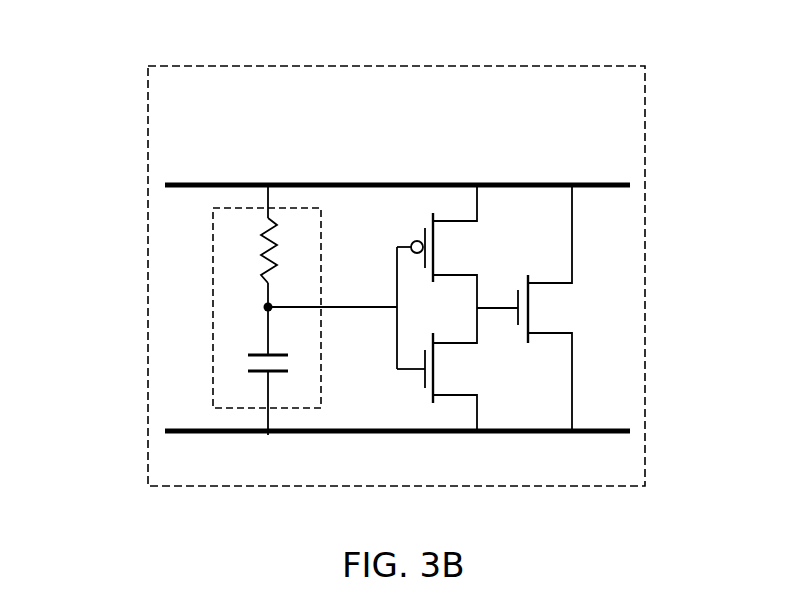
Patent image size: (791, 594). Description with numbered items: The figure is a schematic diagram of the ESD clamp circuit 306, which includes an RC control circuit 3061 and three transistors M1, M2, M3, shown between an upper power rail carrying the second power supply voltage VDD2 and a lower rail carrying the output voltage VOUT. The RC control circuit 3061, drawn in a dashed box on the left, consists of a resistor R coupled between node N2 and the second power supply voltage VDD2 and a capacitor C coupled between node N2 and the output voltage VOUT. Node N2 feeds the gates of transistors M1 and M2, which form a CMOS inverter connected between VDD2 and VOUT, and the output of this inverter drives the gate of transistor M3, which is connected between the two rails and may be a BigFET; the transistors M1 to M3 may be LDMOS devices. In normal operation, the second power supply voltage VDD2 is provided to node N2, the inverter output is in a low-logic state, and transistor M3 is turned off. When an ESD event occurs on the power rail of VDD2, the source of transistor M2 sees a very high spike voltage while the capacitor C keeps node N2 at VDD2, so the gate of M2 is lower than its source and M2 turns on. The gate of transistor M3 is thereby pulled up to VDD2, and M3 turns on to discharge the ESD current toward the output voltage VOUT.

The ESD clamp circuit 306 is at (148, 153).
The RC control circuit 3061 is at (195, 310).
The transistor M1 is at (445, 382).
The transistor M2 is at (442, 264).
The transistor M3 is at (553, 308).
The resistor R is at (281, 250).
The capacitor C is at (278, 364).
The node N2 is at (248, 307).
The second power supply voltage VDD2 is at (397, 164).
The output voltage VOUT is at (397, 451).